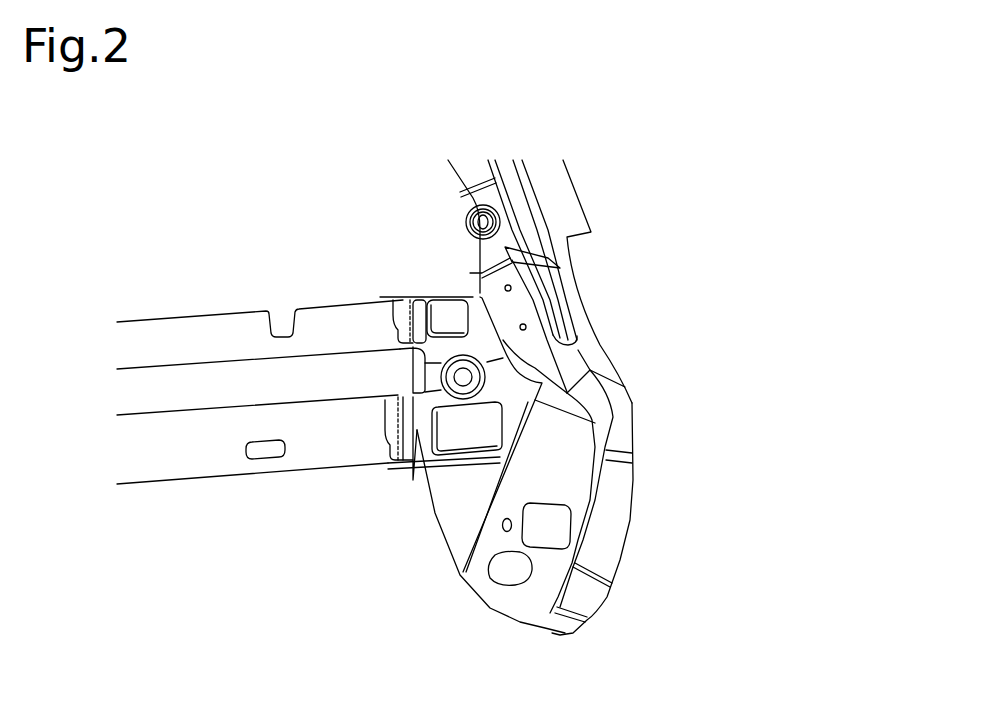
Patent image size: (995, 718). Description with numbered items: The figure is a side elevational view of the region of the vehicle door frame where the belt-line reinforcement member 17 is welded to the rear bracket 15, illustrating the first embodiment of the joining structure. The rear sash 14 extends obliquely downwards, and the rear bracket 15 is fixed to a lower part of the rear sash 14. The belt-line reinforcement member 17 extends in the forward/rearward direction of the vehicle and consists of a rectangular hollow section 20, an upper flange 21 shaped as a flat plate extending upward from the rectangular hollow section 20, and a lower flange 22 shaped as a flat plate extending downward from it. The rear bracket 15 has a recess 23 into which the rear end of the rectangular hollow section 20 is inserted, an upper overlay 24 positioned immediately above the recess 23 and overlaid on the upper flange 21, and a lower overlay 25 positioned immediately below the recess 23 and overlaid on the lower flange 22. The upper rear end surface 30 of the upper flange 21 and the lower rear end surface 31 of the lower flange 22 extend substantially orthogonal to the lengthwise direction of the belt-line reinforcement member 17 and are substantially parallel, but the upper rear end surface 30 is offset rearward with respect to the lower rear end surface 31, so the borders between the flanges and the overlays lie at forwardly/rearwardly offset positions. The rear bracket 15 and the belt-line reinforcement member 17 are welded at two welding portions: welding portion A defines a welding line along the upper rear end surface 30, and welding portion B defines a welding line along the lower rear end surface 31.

The rear sash 14 is at (570, 200).
The rear bracket 15 is at (567, 482).
The belt-line reinforcement member 17 is at (146, 492).
The rectangular hollow section 20 is at (168, 383).
The upper flange 21 is at (248, 330).
The lower flange 22 is at (216, 452).
The recess 23 is at (450, 443).
The upper overlay 24 is at (420, 320).
The lower overlay 25 is at (417, 432).
The upper rear end surface 30 is at (420, 300).
The lower rear end surface 31 is at (393, 485).
The welding portion A is at (400, 326).
The welding portion B is at (388, 433).